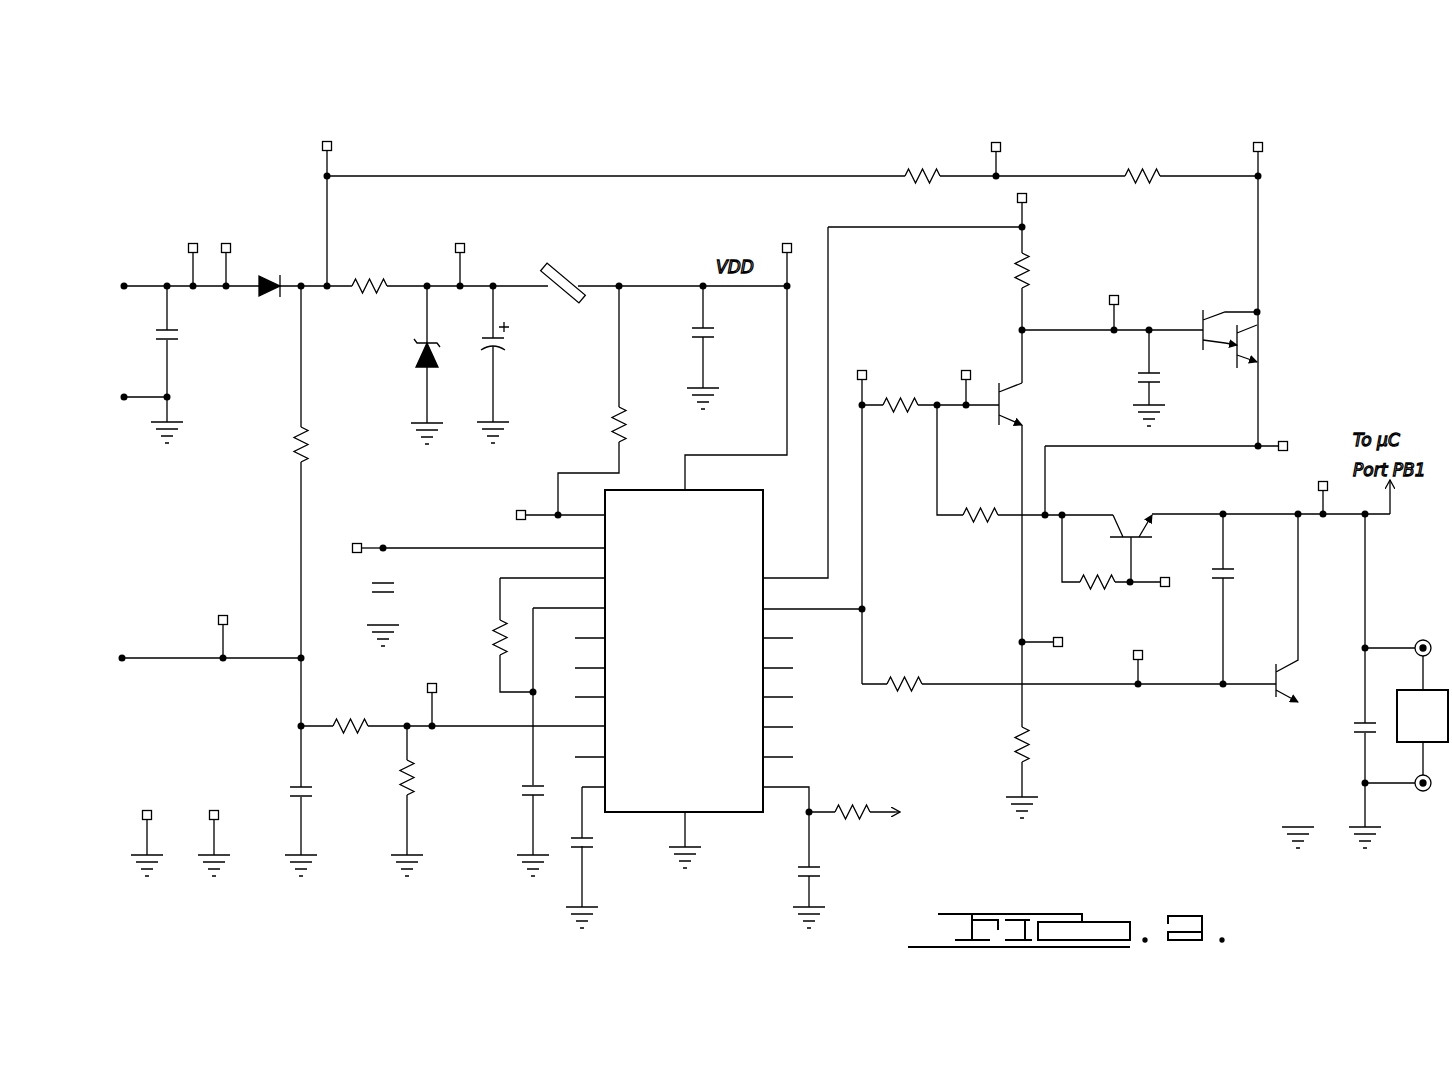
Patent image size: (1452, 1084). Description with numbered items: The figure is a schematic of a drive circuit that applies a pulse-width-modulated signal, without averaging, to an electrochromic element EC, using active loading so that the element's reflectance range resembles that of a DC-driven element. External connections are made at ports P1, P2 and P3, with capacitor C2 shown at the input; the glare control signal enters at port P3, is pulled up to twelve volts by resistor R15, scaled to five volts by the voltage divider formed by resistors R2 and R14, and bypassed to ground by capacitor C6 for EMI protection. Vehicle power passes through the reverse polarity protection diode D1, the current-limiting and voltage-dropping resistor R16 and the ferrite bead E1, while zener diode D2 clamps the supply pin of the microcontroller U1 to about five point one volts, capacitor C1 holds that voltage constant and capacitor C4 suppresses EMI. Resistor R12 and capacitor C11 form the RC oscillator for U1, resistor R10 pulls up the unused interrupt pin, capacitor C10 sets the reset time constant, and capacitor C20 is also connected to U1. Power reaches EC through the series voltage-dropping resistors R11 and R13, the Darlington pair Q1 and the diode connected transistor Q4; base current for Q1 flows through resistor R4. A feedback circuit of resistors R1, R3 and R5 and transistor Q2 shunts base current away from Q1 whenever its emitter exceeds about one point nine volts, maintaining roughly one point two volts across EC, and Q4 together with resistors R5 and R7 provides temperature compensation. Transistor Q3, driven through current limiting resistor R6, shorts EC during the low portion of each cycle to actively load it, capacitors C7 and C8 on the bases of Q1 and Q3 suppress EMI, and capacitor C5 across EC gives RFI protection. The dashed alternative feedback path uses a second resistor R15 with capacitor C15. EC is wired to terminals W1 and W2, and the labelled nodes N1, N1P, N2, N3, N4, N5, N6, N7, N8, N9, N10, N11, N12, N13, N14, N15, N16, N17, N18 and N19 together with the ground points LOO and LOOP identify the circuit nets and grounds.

The input port P1 is at (125, 268).
The ground port P2 is at (124, 381).
The glare input port P3 is at (148, 658).
The node N1 is at (193, 236).
The node N1P is at (231, 236).
The node N2 is at (326, 134).
The node N3 is at (223, 608).
The node N4 is at (415, 685).
The node N5 is at (462, 236).
The node N6 is at (790, 236).
The node N7 is at (1040, 201).
The node N8 is at (865, 362).
The node N9 is at (999, 136).
The node N10 is at (1257, 136).
The node N11 is at (1138, 301).
The node N12 is at (969, 362).
The node N13 is at (1162, 658).
The node N14 is at (1304, 490).
The node N15 is at (498, 514).
The node N16 is at (347, 548).
The node N17 is at (1294, 431).
The node N18 is at (1080, 643).
The node N19 is at (1176, 598).
The ground test node LOO is at (148, 803).
The ground test node LOOP is at (216, 803).
The diode D1 is at (269, 327).
The zener diode D2 is at (426, 375).
The capacitor C1 is at (517, 364).
The capacitor 0.01uF C2 is at (179, 339).
The capacitor C4 is at (716, 331).
The capacitor C5 is at (1342, 771).
The bypass capacitor C6 is at (316, 805).
The capacitor C7 is at (1165, 387).
The capacitor C8 is at (1248, 588).
The capacitor C10 is at (393, 590).
The capacitor C11 is at (512, 799).
The capacitor C15 is at (781, 870).
The capacitor 0.1uF C20 is at (605, 858).
The resistor R1 is at (902, 428).
The resistor R2 is at (346, 727).
The resistor R3 is at (978, 534).
The resistor R4 is at (1044, 284).
The resistor R5 is at (1041, 754).
The current limiting resistor R6 is at (900, 685).
The resistor R7 is at (1102, 585).
The resistor R10 is at (642, 429).
The resistor R11 is at (925, 181).
The resistor R12 is at (480, 650).
The resistor R13 is at (1142, 181).
The resistor R14 is at (427, 799).
The resistor R15 is at (623, 631).
The resistor R16 is at (370, 286).
The ferrite bead E1 is at (564, 316).
The Darlington pair Q1 is at (1269, 345).
The transistor Q2 is at (1062, 413).
The transistor Q3 is at (1299, 654).
The diode connected transistor Q4 is at (1135, 520).
The microcontroller U1 is at (686, 653).
The wire terminal 0.040 W1 is at (1420, 818).
The wire terminal 0.040 W2 is at (1422, 621).
The electrochromic element EC is at (1422, 716).